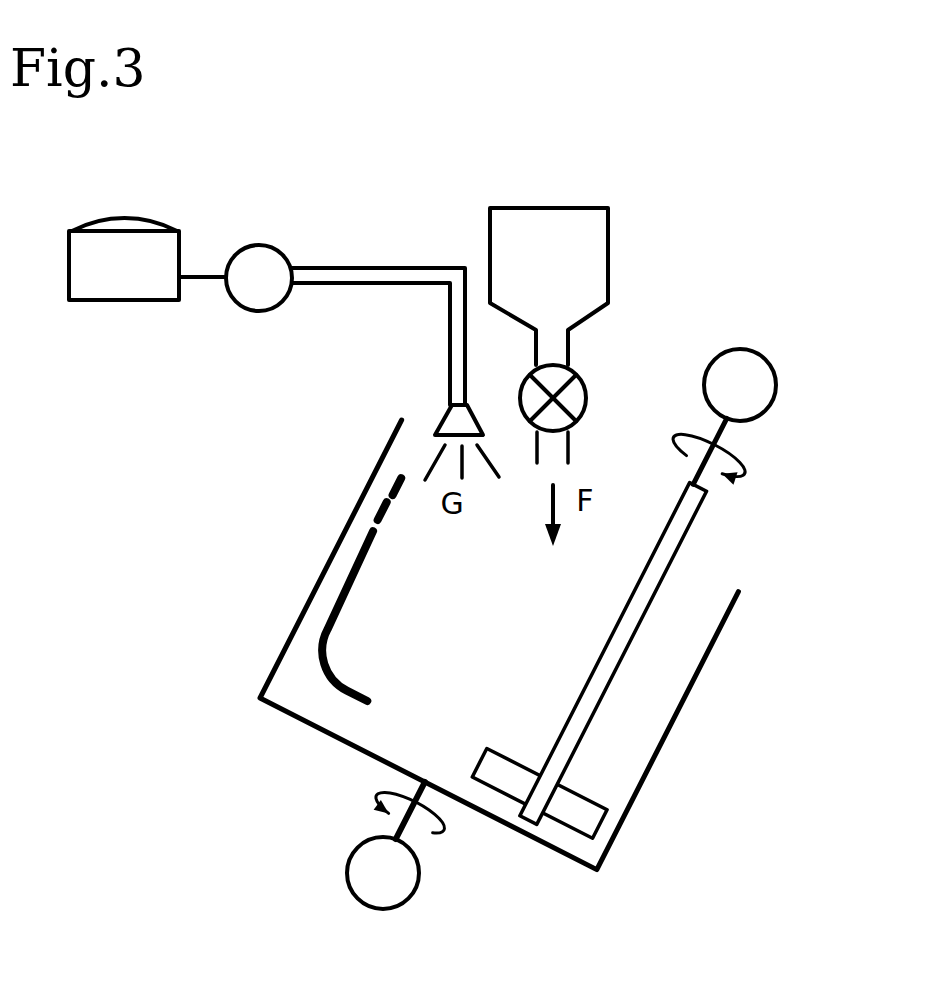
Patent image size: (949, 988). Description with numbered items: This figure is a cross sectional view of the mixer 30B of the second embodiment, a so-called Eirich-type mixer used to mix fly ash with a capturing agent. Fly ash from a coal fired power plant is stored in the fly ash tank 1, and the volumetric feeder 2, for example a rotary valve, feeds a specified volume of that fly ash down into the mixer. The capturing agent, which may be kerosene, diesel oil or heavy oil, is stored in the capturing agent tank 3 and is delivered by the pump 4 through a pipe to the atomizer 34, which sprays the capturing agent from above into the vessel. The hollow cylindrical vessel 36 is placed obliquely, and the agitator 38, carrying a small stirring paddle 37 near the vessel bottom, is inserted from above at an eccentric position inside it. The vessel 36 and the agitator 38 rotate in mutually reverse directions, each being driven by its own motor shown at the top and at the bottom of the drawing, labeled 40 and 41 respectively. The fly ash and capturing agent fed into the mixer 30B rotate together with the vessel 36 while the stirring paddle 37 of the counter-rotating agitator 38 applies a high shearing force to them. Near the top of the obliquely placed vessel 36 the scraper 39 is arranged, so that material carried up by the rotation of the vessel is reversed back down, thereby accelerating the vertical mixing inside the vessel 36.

The fly ash tank 1 is at (608, 265).
The volumetric feeder 2 is at (586, 393).
The capturing agent tank 3 is at (153, 220).
The pump 4 is at (270, 247).
The mixer 30B is at (871, 215).
The atomizer 34 is at (448, 417).
The hollow cylindrical vessel 36 is at (663, 740).
The stirring paddle 37 is at (605, 823).
The agitator 38 is at (625, 642).
The scraper 39 is at (320, 667).
The agitator motor 40 is at (778, 378).
The vessel drive motor 41 is at (348, 862).